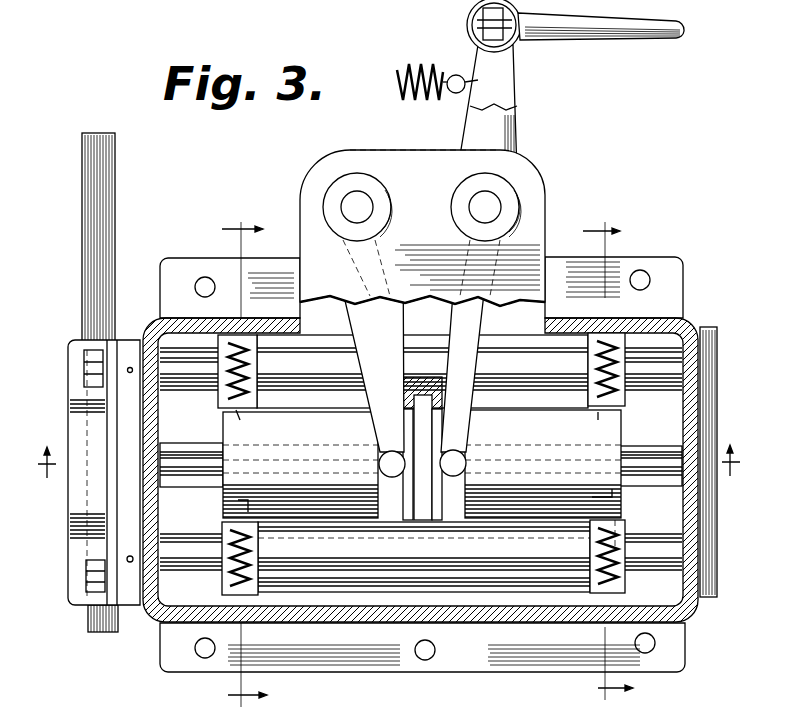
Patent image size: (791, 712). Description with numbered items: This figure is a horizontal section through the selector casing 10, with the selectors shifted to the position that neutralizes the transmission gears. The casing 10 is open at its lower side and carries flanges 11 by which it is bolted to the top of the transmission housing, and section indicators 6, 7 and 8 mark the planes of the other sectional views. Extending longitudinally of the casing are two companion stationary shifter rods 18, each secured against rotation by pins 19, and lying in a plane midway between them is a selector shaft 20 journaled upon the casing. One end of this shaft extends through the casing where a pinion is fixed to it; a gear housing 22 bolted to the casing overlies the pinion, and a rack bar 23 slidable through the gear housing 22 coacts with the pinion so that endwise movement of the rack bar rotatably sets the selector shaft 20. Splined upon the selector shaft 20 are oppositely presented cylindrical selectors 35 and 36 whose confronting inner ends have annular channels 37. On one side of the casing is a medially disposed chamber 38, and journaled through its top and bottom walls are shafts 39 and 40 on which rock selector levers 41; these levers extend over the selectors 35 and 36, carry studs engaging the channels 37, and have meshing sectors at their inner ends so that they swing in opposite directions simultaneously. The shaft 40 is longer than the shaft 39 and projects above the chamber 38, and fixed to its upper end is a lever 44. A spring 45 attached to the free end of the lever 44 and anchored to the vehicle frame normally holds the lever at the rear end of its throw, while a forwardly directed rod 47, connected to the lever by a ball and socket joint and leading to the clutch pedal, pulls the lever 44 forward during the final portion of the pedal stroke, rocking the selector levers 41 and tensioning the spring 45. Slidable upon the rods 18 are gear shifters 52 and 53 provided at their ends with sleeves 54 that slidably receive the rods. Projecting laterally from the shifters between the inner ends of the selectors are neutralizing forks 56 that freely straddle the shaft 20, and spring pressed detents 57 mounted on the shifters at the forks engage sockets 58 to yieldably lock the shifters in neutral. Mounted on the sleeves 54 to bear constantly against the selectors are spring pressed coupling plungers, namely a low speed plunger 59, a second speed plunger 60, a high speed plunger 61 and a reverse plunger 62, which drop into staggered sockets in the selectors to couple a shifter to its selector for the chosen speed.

The section line 6 is at (387, 461).
The section line 7 is at (608, 457).
The section line 8 is at (244, 452).
The casing 10 is at (551, 623).
The flanges 11 is at (653, 266).
The stationary shifter rods 18 is at (421, 459).
The pins 19 is at (130, 373).
The selector shaft 20 is at (646, 450).
The gear housing 22 is at (74, 521).
The rack bar 23 is at (118, 219).
The selector 35 is at (543, 464).
The selector 36 is at (300, 465).
The annular channels 37 is at (362, 492).
The chamber 38 is at (408, 146).
The shaft 39 is at (355, 205).
The shaft 40 is at (492, 205).
The selector levers 41 is at (467, 318).
The lever 44 is at (505, 128).
The spring 45 is at (418, 60).
The rod 47 is at (650, 40).
The gear shifter 52 is at (510, 394).
The gear shifter 53 is at (532, 527).
The sleeves 54 is at (218, 345).
The neutralizing forks 56 is at (410, 437).
The spring pressed detents 57 is at (441, 392).
The sockets 58 is at (431, 380).
The low speed plunger 59 is at (617, 518).
The second speed plunger 60 is at (238, 414).
The high speed plunger 61 is at (600, 422).
The reverse plunger 62 is at (238, 508).